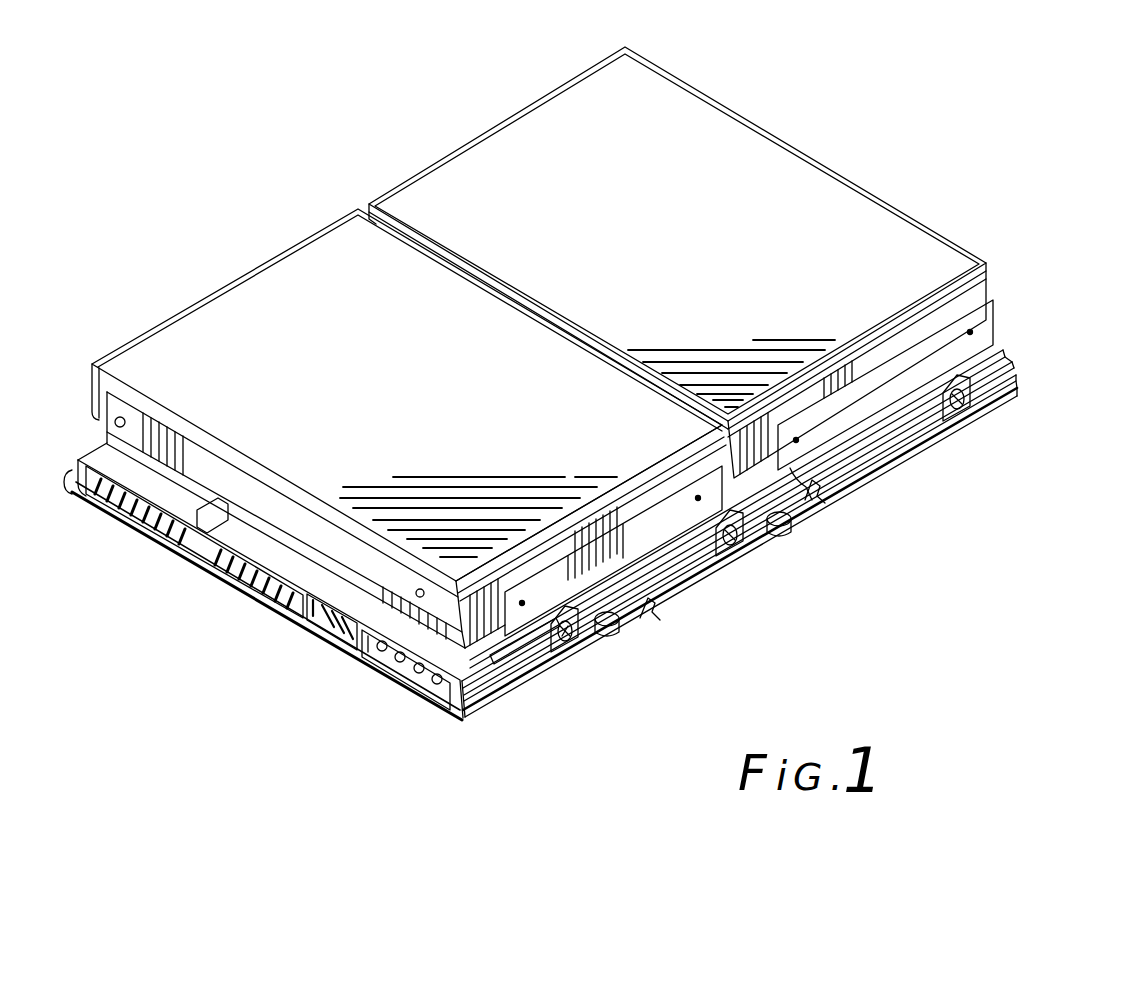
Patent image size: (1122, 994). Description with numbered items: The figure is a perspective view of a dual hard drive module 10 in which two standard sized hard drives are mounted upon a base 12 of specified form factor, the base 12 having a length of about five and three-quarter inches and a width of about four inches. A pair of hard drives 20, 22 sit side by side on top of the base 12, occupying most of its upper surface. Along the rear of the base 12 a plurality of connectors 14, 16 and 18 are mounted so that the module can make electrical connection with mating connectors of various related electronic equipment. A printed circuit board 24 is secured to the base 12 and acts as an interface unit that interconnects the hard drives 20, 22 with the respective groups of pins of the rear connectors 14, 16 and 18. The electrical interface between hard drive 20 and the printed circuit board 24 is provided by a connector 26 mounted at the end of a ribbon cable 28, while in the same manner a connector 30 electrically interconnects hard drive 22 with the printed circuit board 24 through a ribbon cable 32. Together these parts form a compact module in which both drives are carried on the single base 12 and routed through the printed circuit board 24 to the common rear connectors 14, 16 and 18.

The dual hard drive module 10 is at (1010, 488).
The base 12 is at (713, 562).
The connector 14 is at (192, 552).
The connector 16 is at (330, 637).
The connector 18 is at (408, 678).
The hard drive 20 is at (855, 215).
The hard drive 22 is at (272, 298).
The printed circuit board 24 is at (1000, 352).
The connector 26 is at (984, 328).
The ribbon cable 28 is at (773, 473).
The connector 30 is at (610, 555).
The ribbon cable 32 is at (507, 627).